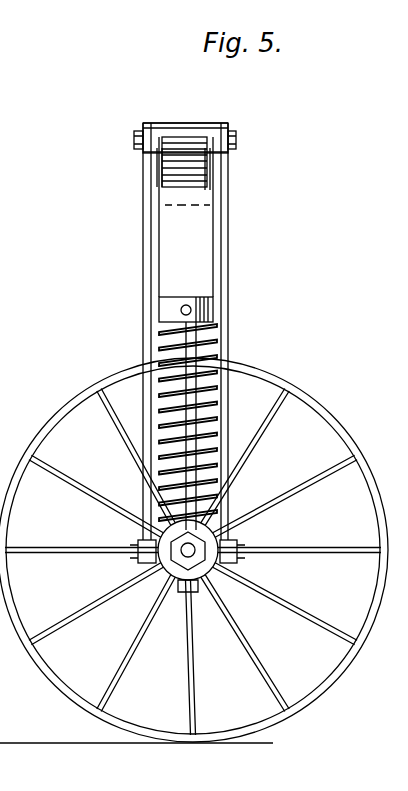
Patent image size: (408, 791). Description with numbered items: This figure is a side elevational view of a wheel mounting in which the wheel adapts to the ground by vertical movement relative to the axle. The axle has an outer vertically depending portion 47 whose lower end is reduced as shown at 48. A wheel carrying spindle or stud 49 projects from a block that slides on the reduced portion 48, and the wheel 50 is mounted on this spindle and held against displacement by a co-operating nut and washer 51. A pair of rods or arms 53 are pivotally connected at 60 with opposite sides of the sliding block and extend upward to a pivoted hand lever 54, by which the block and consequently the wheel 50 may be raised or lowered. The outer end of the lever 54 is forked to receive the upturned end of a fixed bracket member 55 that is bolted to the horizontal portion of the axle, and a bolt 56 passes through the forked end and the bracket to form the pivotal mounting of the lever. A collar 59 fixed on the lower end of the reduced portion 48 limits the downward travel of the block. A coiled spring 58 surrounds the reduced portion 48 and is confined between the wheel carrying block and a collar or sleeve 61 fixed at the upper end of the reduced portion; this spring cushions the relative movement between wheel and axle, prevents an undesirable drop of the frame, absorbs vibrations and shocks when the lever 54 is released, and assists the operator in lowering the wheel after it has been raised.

The vertically depending portion of the axle 47 is at (197, 248).
The reduced portion of the axle 48 is at (217, 335).
The wheel carrying spindle 49 is at (168, 574).
The wheel 50 is at (302, 395).
The nut and washer 51 is at (197, 610).
The rods or arms 53 is at (143, 257).
The hand lever 54 is at (218, 123).
The bracket member 55 is at (192, 143).
The bolt 56 is at (238, 130).
The coiled spring 58 is at (160, 338).
The collar 59 is at (227, 568).
The pivotal connection 60 is at (134, 555).
The collar or sleeve 61 is at (172, 303).